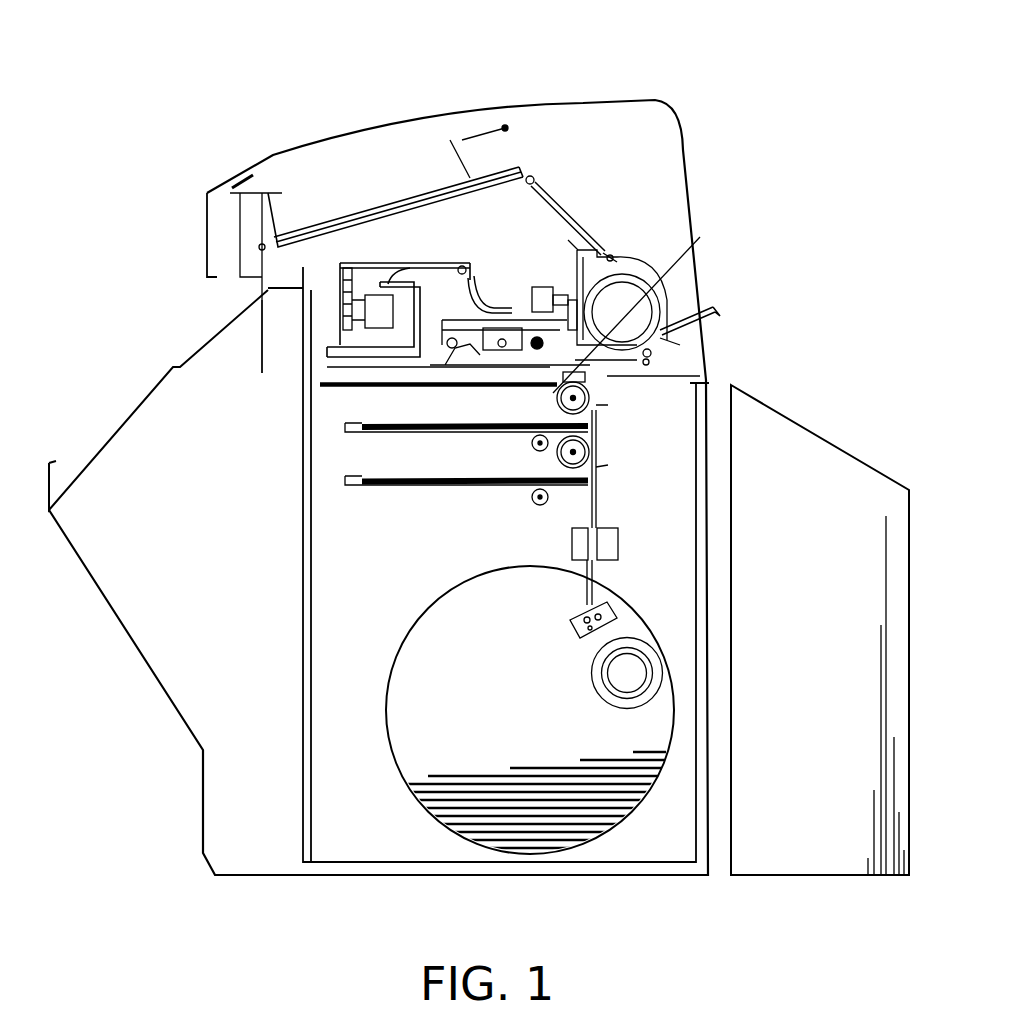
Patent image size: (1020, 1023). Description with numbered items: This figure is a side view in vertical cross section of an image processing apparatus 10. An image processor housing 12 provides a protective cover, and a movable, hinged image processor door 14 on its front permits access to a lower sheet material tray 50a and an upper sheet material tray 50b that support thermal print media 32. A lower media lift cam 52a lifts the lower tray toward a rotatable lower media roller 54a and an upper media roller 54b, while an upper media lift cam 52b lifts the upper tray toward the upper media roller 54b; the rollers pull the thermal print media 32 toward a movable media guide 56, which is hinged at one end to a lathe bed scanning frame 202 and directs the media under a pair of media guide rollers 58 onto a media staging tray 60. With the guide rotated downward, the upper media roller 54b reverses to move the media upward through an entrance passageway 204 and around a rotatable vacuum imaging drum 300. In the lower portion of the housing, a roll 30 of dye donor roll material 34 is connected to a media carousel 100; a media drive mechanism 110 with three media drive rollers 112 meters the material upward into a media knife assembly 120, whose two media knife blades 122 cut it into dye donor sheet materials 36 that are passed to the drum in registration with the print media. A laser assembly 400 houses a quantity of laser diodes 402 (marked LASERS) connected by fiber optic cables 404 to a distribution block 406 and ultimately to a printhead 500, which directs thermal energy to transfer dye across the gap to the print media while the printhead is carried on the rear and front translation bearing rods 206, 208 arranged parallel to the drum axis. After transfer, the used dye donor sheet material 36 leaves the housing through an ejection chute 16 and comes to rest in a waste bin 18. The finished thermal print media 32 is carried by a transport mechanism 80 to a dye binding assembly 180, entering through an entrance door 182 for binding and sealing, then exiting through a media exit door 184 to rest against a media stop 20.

The image processing apparatus 10 is at (498, 37).
The image processor housing 12 is at (272, 152).
The image processor door 14 is at (157, 678).
The ejection chute 16 is at (716, 304).
The waste bin 18 is at (812, 418).
The media stop 20 is at (52, 463).
The roll 30 is at (648, 695).
The thermal print media 32 is at (450, 426).
The dye donor roll material 34 is at (627, 674).
The dye donor sheet material 36 is at (700, 517).
The lower sheet material tray 50a is at (345, 482).
The upper sheet material tray 50b is at (345, 428).
The lower media lift cam 52a is at (538, 505).
The upper media lift cam 52b is at (535, 452).
The lower media roller 54a is at (597, 468).
The upper media roller 54b is at (598, 455).
The movable media guide 56 is at (600, 405).
The media guide rollers 58 is at (554, 398).
The media staging tray 60 is at (330, 424).
The transport mechanism 80 is at (585, 226).
The media carousel 100 is at (388, 716).
The media drive mechanism 110 is at (618, 612).
The media drive rollers 112 is at (568, 625).
The media knife assembly 120 is at (622, 546).
The media knife blades 122 is at (600, 575).
The dye binding assembly 180 is at (465, 172).
The entrance door 182 is at (505, 126).
The media exit door 184 is at (300, 188).
The lathe bed scanning frame 202 is at (700, 237).
The entrance passageway 204 is at (705, 368).
The rear translation bearing rod 206 is at (392, 386).
The front translation bearing rod 208 is at (530, 376).
The vacuum imaging drum 300 is at (633, 307).
The laser assembly 400 is at (385, 270).
The laser diodes 402 is at (262, 302).
The fiber optic cables 404 is at (395, 264).
The distribution block 406 is at (572, 252).
The printhead 500 is at (600, 238).
The lasers label LASERS is at (330, 360).